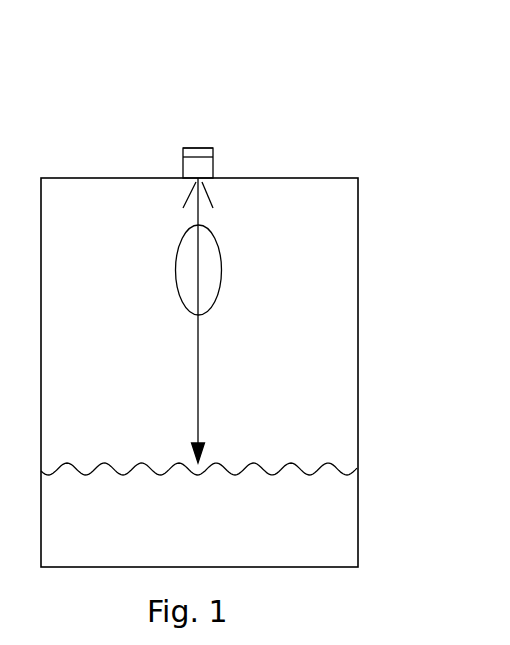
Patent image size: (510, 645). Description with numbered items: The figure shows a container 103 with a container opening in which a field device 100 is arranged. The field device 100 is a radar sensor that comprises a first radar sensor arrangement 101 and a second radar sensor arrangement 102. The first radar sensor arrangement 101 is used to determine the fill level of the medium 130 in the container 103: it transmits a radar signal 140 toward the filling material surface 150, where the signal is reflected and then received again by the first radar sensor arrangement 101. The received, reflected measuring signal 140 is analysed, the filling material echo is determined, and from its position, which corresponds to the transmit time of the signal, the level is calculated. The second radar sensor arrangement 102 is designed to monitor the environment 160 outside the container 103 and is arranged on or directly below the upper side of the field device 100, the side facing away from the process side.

The field device 100 is at (213, 162).
The first radar sensor arrangement 101 is at (213, 183).
The second radar sensor arrangement 102 is at (197, 149).
The container 103 is at (358, 325).
The medium 130 is at (337, 530).
The radar signal 140 is at (210, 278).
The filling material surface 150 is at (258, 467).
The environment 160 is at (242, 93).